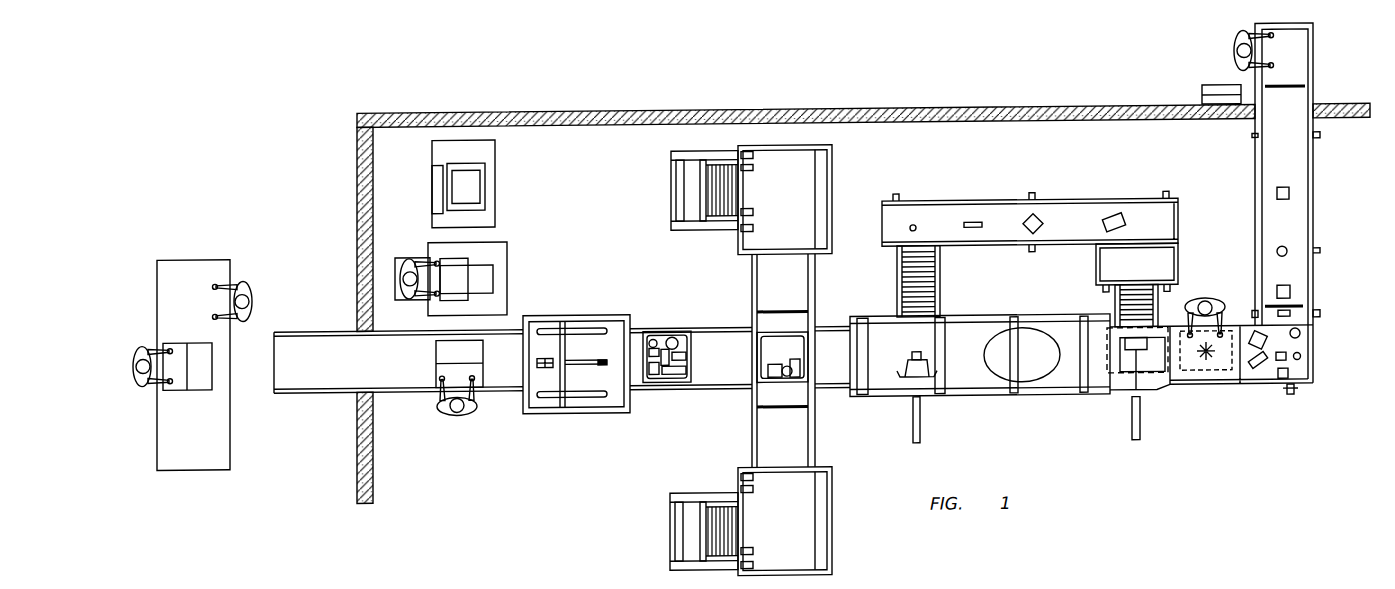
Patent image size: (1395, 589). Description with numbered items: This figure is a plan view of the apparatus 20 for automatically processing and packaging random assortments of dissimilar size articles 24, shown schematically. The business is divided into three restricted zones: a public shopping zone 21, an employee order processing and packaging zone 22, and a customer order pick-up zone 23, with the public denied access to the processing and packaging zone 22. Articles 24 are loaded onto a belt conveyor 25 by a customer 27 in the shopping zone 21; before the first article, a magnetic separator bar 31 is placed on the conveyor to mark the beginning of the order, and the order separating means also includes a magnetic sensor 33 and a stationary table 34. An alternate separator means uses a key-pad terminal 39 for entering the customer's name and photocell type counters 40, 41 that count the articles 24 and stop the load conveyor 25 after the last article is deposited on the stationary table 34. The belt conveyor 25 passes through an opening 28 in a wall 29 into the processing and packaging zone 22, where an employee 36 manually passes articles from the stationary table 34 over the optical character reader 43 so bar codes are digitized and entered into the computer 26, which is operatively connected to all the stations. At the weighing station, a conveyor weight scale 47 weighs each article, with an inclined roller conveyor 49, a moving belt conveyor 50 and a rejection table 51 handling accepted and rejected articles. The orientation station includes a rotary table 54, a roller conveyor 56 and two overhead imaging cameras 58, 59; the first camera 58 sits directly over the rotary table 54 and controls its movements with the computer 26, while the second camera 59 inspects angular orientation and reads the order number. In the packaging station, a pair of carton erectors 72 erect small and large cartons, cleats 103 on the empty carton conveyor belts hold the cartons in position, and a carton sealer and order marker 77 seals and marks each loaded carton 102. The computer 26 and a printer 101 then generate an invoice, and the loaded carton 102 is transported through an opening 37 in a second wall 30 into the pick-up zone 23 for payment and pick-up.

The apparatus 20 is at (513, 506).
The public shopping zone 21 is at (961, 81).
The employee order processing and packaging zone 22 is at (1068, 164).
The customer order pick-up zone 23 is at (206, 182).
The articles 24 is at (1033, 220).
The belt conveyor 25 is at (1285, 234).
The computer 26 is at (487, 180).
The customer 27 is at (1235, 57).
The opening 28 is at (1315, 114).
The wall 29 is at (1222, 123).
The second wall 30 is at (375, 489).
The magnetic separator bars 31 is at (1290, 92).
The magnetic sensor 33 is at (1295, 296).
The stationary table 34 is at (1293, 398).
The employee 36 is at (1207, 304).
The opening 37 is at (350, 396).
The key-pad terminal 39 is at (1202, 99).
The photocell type counter 40 is at (1320, 143).
The photocell type counter 41 is at (1318, 324).
The optical character reader 43 is at (1210, 377).
The conveyor weight scale 47 is at (1150, 400).
The inclined roller conveyor 49 is at (1128, 319).
The moving belt conveyor 50 is at (980, 223).
The rejection table 51 is at (1165, 275).
The rotary table 54 is at (1030, 378).
The roller conveyor 56 is at (912, 287).
The overhead imaging camera 58 is at (1020, 323).
The overhead imaging camera 59 is at (910, 372).
The carton erectors 72 is at (728, 228).
The carton sealer and order marker 77 is at (583, 412).
The printer 101 is at (468, 263).
The carton 102 is at (437, 358).
The cleats 103 is at (771, 311).